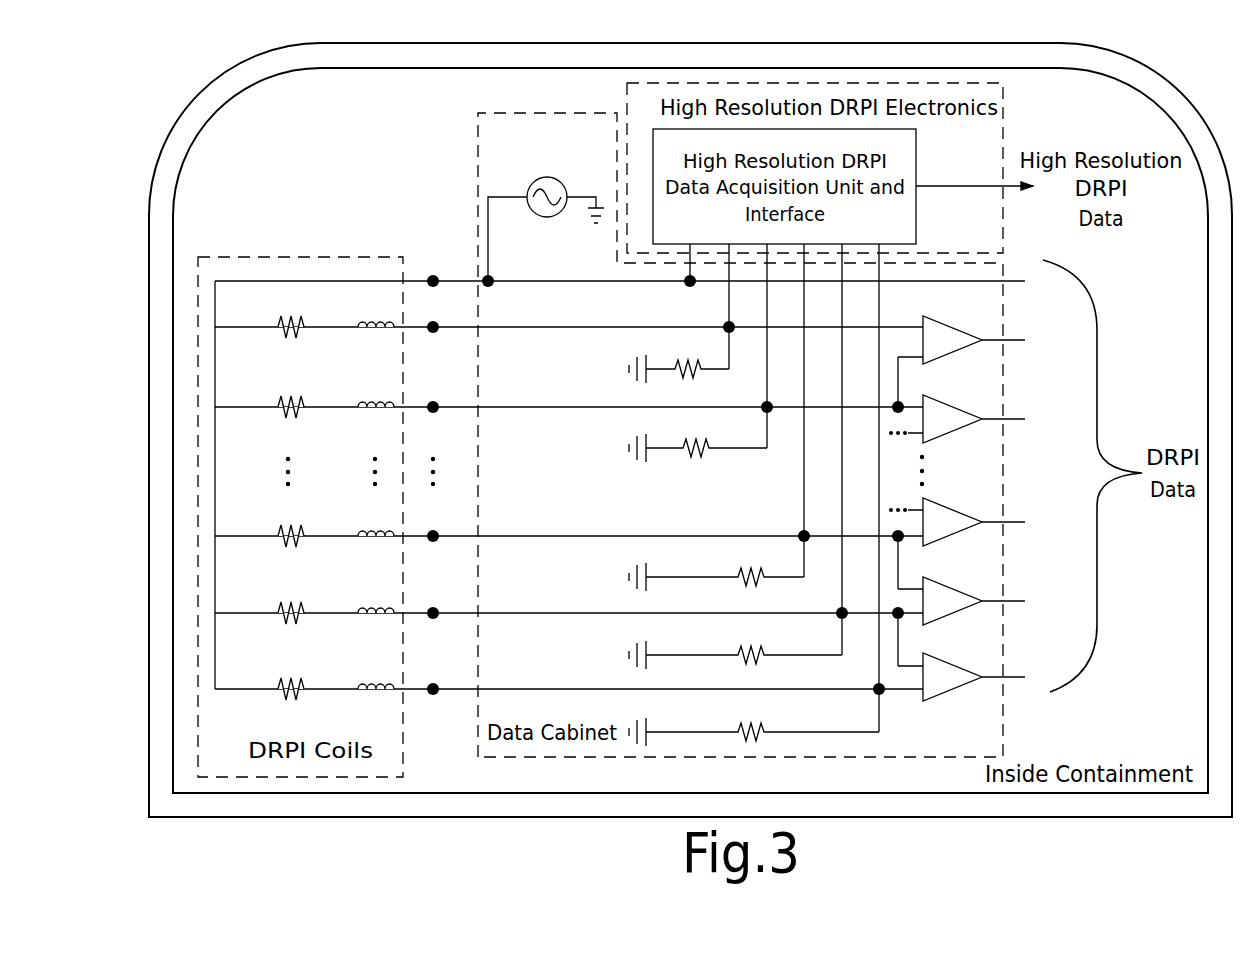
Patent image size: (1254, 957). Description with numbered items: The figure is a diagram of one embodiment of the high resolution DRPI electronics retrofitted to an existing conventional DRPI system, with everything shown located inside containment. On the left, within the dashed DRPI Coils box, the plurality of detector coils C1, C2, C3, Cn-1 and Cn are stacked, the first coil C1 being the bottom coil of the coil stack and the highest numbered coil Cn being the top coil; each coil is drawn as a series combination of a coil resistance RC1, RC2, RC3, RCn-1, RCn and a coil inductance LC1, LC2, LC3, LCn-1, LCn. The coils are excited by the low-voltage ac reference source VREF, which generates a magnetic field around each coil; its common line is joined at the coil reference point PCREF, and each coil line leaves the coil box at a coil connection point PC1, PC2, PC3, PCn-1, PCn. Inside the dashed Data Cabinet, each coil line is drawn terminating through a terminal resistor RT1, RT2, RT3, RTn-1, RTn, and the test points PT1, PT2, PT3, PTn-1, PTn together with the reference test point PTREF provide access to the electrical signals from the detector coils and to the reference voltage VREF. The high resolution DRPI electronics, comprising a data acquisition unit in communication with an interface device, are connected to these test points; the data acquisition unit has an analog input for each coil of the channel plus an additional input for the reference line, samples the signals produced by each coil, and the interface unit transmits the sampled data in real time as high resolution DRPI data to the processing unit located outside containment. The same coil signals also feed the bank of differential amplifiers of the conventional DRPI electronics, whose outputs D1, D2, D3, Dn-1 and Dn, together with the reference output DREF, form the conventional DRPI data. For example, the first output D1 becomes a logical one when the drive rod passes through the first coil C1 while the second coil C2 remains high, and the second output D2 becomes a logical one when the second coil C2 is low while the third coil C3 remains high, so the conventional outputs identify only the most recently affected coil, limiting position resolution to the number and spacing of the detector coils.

The reference voltage VREF is at (546, 205).
The coil reference connection point PCREF is at (460, 268).
The reference test point PTREF is at (695, 291).
The reference data output DREF is at (640, 281).
The detector coil Cn is at (569, 342).
The detector coil Cn-1 is at (569, 422).
The third coil C3 is at (569, 551).
The second coil C2 is at (569, 629).
The first coil C1 is at (569, 705).
The coil resistance n RCn is at (295, 316).
The coil resistance n-1 RCn-1 is at (300, 396).
The coil resistance 3 RC3 is at (295, 525).
The coil resistance 2 RC2 is at (295, 602).
The coil resistance 1 RC1 is at (295, 678).
The coil inductance n LCn is at (376, 310).
The coil inductance n-1 LCn-1 is at (378, 390).
The coil inductance 3 LC3 is at (376, 519).
The coil inductance 2 LC2 is at (376, 596).
The coil inductance 1 LC1 is at (376, 672).
The coil connection point n PCn is at (443, 313).
The coil connection point n-1 PCn-1 is at (449, 393).
The coil connection point 3 PC3 is at (443, 522).
The coil connection point 2 PC2 is at (443, 599).
The coil connection point 1 PC1 is at (443, 675).
The test point PTn is at (744, 339).
The test point PTn-1 is at (787, 419).
The test point PT3 is at (818, 550).
The test point PT2 is at (856, 627).
The test point PT1 is at (893, 704).
The terminal resistor n RTn is at (679, 359).
The terminal resistor n-1 RTn-1 is at (698, 438).
The terminal resistor 3 RT3 is at (716, 565).
The terminal resistor 2 RT2 is at (735, 643).
The terminal resistor 1 RT1 is at (754, 720).
The data output n Dn is at (975, 361).
The data output n-1 Dn-1 is at (985, 419).
The data output 3 D3 is at (975, 543).
The second conventional DRPI electronics output D2 is at (975, 621).
The first conventional DRPI electronics output D1 is at (975, 677).